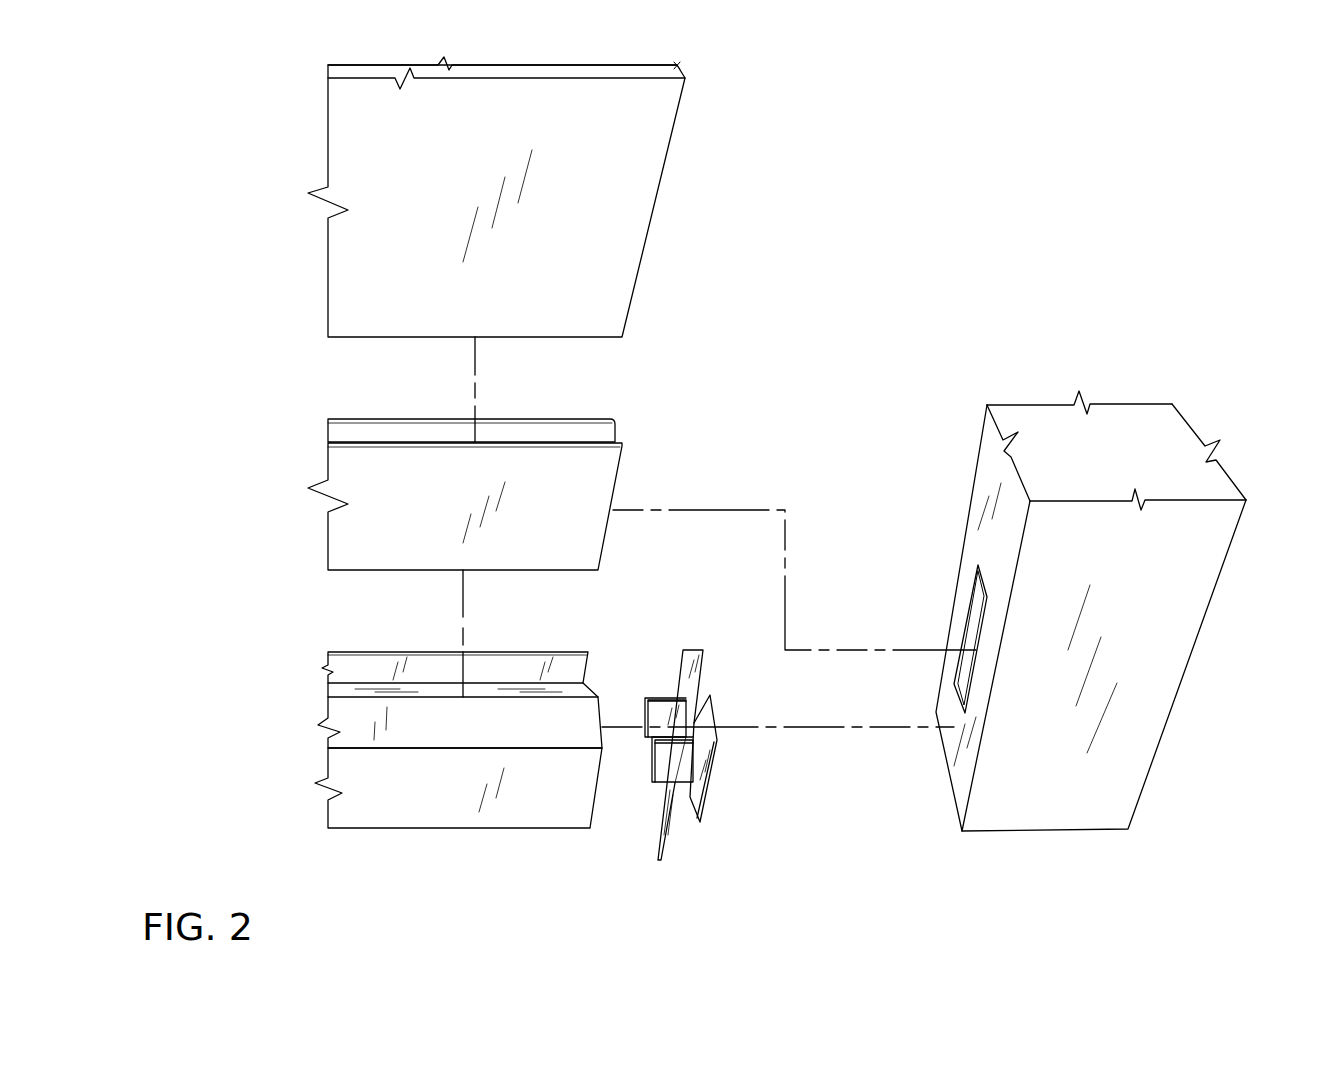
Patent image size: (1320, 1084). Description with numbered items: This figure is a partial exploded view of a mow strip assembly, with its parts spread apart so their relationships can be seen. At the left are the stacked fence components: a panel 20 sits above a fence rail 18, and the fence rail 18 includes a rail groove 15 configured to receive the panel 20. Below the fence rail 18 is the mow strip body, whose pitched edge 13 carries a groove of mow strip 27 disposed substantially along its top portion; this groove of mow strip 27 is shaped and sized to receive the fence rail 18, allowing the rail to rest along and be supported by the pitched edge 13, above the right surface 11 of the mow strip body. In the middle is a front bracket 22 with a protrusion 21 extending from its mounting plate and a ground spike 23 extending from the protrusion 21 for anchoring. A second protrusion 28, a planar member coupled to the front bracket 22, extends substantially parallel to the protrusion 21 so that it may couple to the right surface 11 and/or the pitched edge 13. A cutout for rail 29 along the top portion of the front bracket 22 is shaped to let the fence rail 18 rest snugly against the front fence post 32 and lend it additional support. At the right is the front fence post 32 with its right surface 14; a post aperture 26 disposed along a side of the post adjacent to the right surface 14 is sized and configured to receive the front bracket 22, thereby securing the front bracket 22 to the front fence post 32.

The right surface 11 is at (394, 801).
The pitched edge 13 is at (431, 741).
The right surface 14 is at (1110, 611).
The rail groove 15 is at (603, 430).
The fence rail 18 is at (415, 506).
The panel 20 is at (440, 181).
The protrusion 21 is at (688, 776).
The front bracket 22 is at (711, 782).
The ground spike 23 is at (670, 838).
The post aperture 26 is at (960, 585).
The groove of mow strip 27 is at (577, 668).
The second protrusion 28 is at (648, 698).
The cutout for rail 29 is at (712, 685).
The front fence post 32 is at (1204, 699).